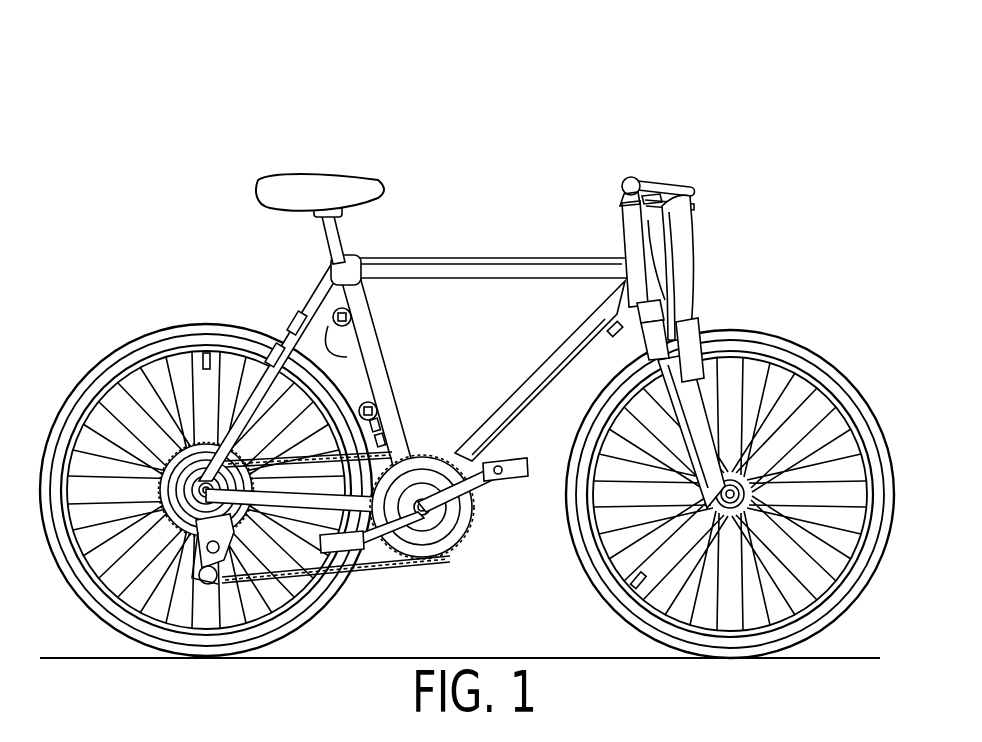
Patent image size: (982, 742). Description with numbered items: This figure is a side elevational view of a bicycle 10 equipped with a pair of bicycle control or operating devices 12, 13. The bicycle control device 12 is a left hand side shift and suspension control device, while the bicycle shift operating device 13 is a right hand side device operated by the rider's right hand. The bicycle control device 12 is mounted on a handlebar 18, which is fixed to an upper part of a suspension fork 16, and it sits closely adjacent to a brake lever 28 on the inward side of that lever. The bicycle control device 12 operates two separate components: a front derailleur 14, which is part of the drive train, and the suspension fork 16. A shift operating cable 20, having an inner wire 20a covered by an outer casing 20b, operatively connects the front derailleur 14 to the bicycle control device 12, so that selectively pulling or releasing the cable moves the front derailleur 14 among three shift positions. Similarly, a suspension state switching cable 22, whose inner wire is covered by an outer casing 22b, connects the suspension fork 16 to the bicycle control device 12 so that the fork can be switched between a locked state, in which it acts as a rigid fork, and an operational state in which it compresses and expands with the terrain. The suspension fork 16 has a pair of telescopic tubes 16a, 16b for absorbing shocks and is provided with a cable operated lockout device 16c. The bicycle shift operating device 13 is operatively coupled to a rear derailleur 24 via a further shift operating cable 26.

The bicycle 10 is at (700, 178).
The bicycle control device 12 is at (622, 218).
The bicycle shift operating device 13 is at (622, 218).
The front derailleur 14 is at (413, 442).
The suspension fork 16 is at (708, 433).
The telescopic tube 16a is at (655, 352).
The telescopic tube 16b is at (667, 430).
The cable operated lockout device 16c is at (620, 322).
The handlebar 18 is at (652, 178).
The shift operating cable 20 is at (320, 315).
The inner wire 20a is at (380, 398).
The outer casing 20b is at (352, 318).
The suspension state switching cable 22 is at (690, 306).
The outer casing 22b is at (683, 292).
The rear derailleur 24 is at (128, 628).
The shift operating cable 26 is at (165, 505).
The brake lever 28 is at (693, 198).